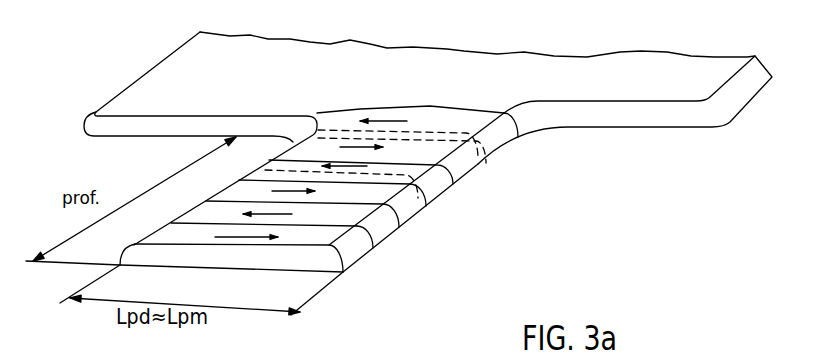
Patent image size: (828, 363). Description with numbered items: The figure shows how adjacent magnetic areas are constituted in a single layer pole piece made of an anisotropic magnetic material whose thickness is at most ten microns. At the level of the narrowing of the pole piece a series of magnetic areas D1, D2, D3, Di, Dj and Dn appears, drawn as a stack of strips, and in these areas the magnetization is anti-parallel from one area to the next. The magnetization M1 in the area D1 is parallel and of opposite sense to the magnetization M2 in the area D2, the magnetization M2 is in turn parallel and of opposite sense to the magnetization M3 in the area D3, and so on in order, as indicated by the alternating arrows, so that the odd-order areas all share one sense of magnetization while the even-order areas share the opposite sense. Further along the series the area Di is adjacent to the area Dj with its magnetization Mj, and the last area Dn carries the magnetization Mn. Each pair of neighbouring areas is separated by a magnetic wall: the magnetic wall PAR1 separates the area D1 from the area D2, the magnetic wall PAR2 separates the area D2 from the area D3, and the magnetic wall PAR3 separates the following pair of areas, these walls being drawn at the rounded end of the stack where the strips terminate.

The magnetization in area D1 M1 is at (264, 232).
The magnetic area D1 is at (231, 258).
The magnetization in area D2 M2 is at (285, 218).
The magnetic area D2 is at (294, 216).
The magnetization in area D3 M3 is at (309, 196).
The magnetic area D3 is at (324, 194).
The magnetic area Di is at (341, 178).
The magnetization in area Dj Mj is at (361, 160).
The magnetic area Dj is at (402, 146).
The magnetization in area Dn Mn is at (410, 119).
The magnetic area Dn is at (485, 122).
The magnetic wall PAR1 is at (371, 244).
The magnetic wall PAR2 is at (390, 219).
The magnetic wall PAR3 is at (419, 203).